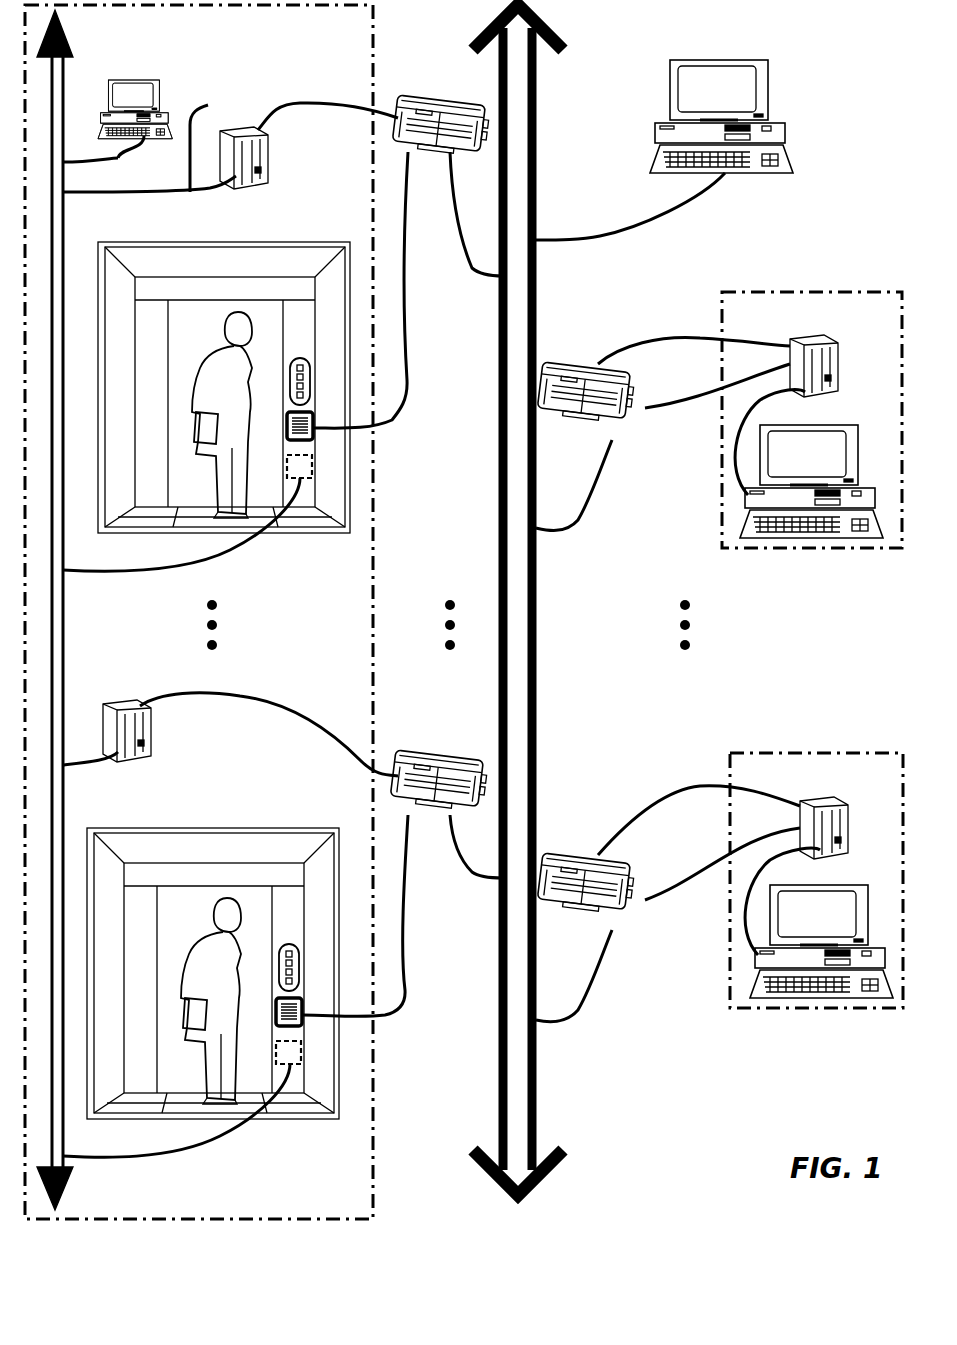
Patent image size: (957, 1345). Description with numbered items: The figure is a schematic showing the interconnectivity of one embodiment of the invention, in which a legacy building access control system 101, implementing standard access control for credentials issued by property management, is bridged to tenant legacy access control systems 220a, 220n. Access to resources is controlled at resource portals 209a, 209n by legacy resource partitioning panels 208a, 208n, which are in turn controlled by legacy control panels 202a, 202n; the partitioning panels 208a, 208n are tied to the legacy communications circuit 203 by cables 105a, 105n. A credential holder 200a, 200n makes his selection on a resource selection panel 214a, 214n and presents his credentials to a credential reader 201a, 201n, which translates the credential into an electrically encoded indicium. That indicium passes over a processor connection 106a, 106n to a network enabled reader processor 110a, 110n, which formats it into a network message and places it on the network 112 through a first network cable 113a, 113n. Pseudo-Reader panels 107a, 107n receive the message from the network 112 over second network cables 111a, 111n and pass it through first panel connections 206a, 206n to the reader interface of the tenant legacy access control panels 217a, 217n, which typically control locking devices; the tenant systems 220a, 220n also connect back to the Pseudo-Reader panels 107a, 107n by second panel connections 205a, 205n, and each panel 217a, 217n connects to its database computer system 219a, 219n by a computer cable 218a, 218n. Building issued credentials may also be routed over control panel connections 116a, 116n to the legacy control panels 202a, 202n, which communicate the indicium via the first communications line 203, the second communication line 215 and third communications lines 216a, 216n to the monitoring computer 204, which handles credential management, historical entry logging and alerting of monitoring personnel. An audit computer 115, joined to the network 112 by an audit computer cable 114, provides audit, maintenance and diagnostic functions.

The legacy building access control system 101 is at (375, 545).
The cable 105a is at (225, 560).
The cable 105n is at (225, 1146).
The processor connection 106a is at (414, 400).
The processor connection 106n is at (414, 1010).
The Pseudo-Reader panel 107a is at (640, 440).
The Pseudo-Reader panel 107n is at (640, 930).
The network enabled reader processor 110a is at (448, 96).
The network enabled reader processor 110n is at (420, 752).
The second network cable 111a is at (580, 530).
The second network cable 111n is at (580, 1032).
The network 112 is at (536, 185).
The first network cable 113a is at (466, 258).
The first network cable 113n is at (466, 862).
The audit computer cable 114 is at (566, 240).
The audit computer 115 is at (686, 60).
The control panel connection 116a is at (282, 104).
The control panel connection 116n is at (340, 714).
The credential holder 200a is at (225, 516).
The credential holder 200n is at (212, 1102).
The credential reader 201a is at (313, 426).
The credential reader 201n is at (302, 1012).
The legacy control panel 202a is at (262, 175).
The legacy control panel 202n is at (150, 742).
The legacy communications circuit 203 is at (64, 82).
The monitoring computer 204 is at (162, 92).
The second panel connection 205a is at (662, 338).
The second panel connection 205n is at (625, 810).
The first panel connection 206a is at (676, 396).
The first panel connection 206n is at (680, 856).
The legacy resource partitioning panel 208a is at (312, 468).
The legacy resource partitioning panel 208n is at (301, 1054).
The resource portal 209a is at (182, 242).
The resource portal 209n is at (167, 828).
The resource selection panel 214a is at (290, 392).
The resource selection panel 214n is at (279, 978).
The second communication line 215 is at (118, 158).
The third communications line 216a is at (168, 141).
The third communications line 216n is at (100, 760).
The tenant legacy access control panel 217a is at (842, 340).
The tenant legacy access control panel 217n is at (805, 840).
The computer cable 218a is at (745, 402).
The computer cable 218n is at (745, 920).
The database computer system 219a is at (790, 540).
The database computer system 219n is at (832, 998).
The tenant legacy access control system 220a is at (722, 292).
The tenant legacy access control system 220n is at (735, 1008).